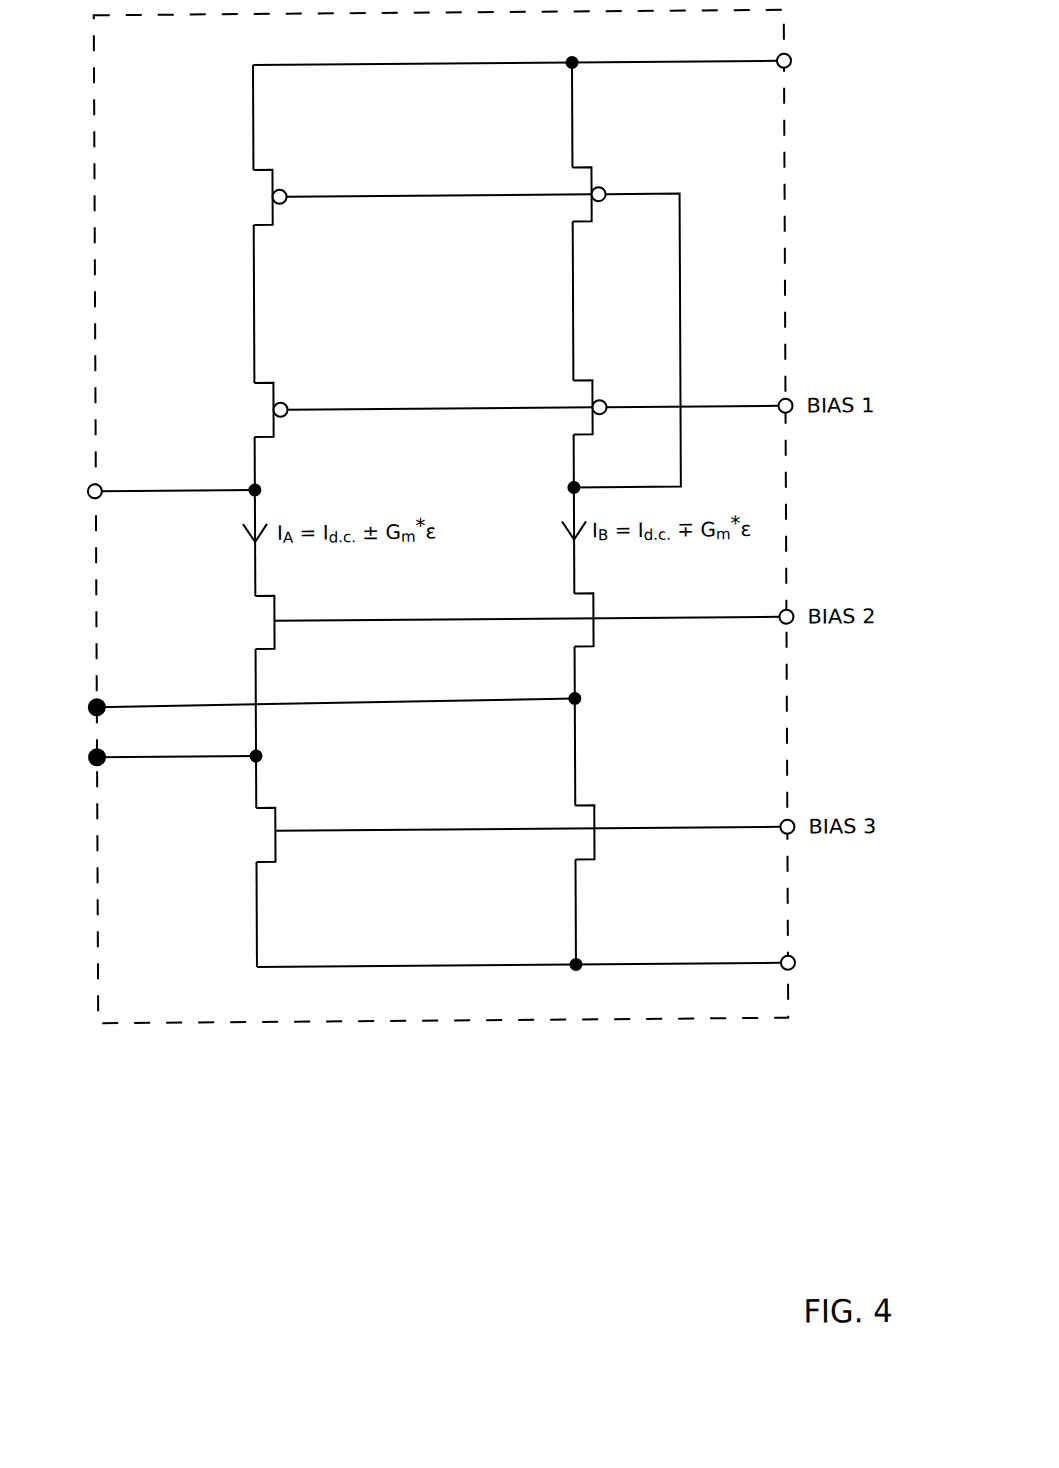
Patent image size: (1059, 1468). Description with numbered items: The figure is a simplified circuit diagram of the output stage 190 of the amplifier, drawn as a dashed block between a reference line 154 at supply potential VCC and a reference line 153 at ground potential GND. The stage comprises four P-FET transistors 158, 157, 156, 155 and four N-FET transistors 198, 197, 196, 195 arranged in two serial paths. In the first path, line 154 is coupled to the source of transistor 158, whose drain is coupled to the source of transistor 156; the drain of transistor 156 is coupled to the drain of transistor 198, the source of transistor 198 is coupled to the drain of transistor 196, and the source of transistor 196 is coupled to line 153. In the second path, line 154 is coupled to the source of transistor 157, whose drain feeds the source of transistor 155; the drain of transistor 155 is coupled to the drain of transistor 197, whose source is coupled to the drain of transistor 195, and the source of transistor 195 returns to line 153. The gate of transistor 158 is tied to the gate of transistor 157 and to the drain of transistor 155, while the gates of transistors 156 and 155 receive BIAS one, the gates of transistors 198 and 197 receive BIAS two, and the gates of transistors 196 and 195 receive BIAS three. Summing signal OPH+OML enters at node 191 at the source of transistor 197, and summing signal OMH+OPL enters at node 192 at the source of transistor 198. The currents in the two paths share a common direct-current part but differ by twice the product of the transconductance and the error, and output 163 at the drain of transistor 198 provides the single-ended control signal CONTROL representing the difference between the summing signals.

The output stage 190 is at (590, 42).
The reference line 154 is at (789, 59).
The reference line 153 is at (789, 962).
The output 163 is at (89, 486).
The node 191 is at (90, 702).
The node 192 is at (90, 752).
The transistor 158 is at (273, 184).
The transistor 157 is at (592, 186).
The transistor 156 is at (273, 397).
The transistor 155 is at (592, 397).
The transistor 198 is at (273, 611).
The transistor 197 is at (592, 611).
The transistor 196 is at (273, 821).
The transistor 195 is at (592, 821).